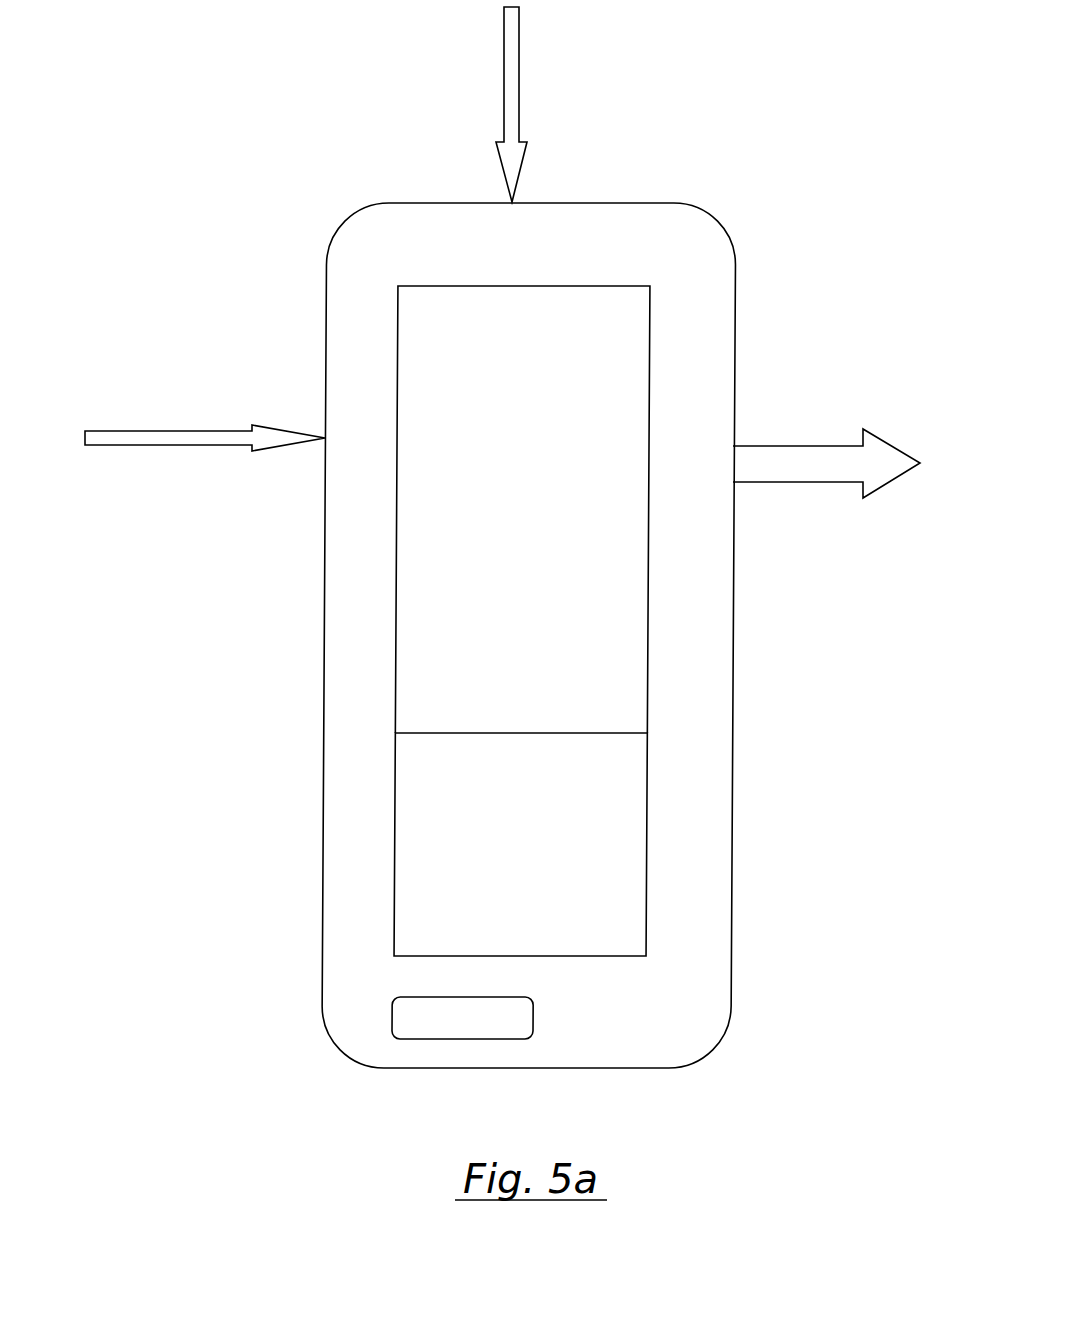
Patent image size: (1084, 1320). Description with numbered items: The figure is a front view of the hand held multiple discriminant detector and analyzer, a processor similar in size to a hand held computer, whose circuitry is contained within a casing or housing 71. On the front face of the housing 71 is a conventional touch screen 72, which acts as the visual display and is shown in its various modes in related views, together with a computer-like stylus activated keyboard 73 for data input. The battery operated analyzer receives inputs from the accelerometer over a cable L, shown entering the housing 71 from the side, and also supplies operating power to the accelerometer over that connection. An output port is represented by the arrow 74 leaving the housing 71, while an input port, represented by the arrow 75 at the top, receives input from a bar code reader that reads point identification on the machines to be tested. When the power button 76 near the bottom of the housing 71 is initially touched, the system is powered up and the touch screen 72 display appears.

The casing or housing 71 is at (620, 832).
The touch screen 72 is at (622, 608).
The stylus activated keyboard 73 is at (552, 635).
The output port 74 is at (777, 442).
The input port 75 is at (527, 63).
The power button 76 is at (392, 1010).
The cable L is at (185, 454).